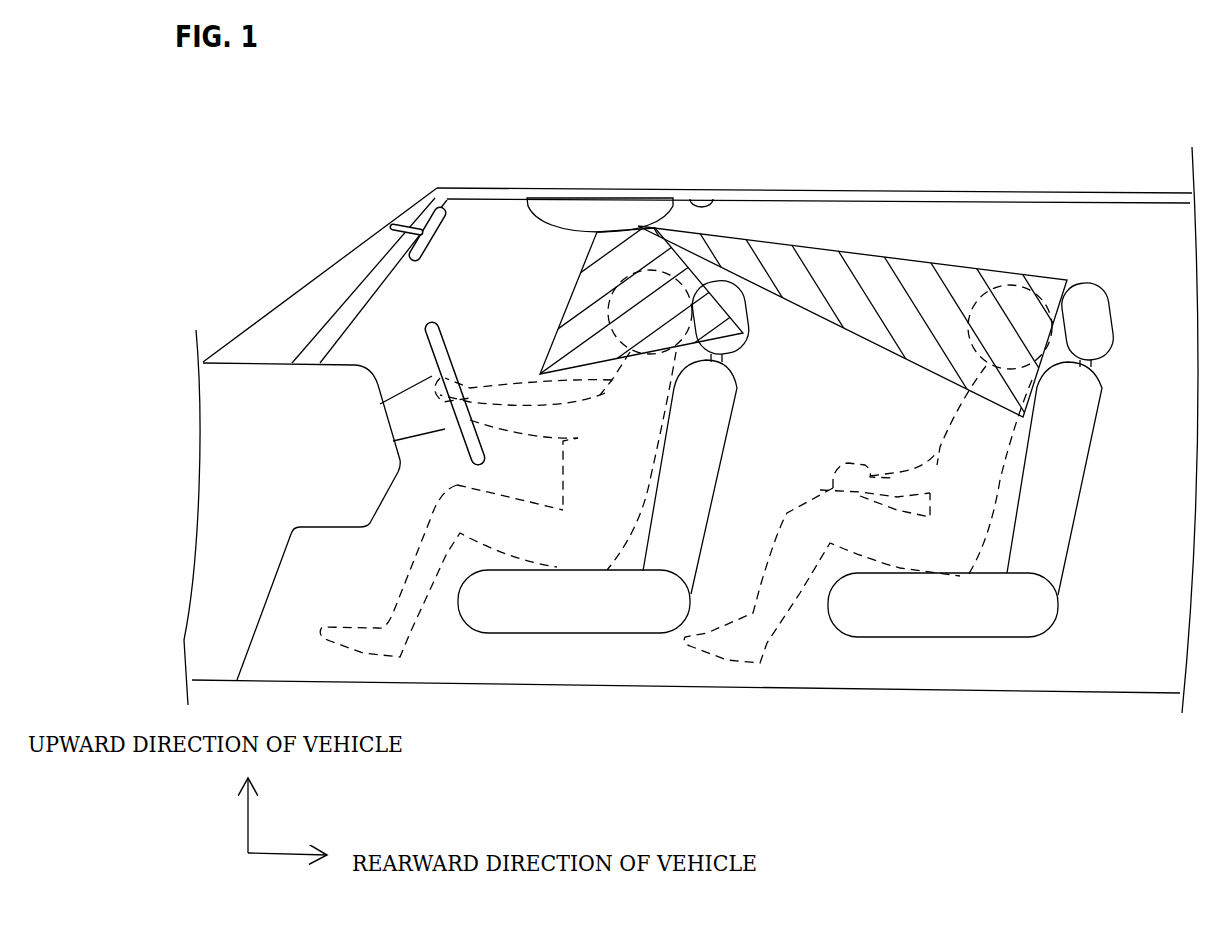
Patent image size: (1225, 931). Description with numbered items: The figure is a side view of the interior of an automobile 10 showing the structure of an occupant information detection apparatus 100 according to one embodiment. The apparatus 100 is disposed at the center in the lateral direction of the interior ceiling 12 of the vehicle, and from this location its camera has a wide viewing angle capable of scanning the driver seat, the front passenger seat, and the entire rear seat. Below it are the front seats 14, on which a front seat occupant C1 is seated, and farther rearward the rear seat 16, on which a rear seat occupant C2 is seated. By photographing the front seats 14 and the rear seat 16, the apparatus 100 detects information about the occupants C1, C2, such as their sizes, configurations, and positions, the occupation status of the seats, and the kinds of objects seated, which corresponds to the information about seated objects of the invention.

The occupant information detection apparatus 100 is at (620, 190).
The automobile 10 is at (848, 190).
The interior ceiling 12 is at (712, 200).
The front seats 14 is at (740, 389).
The rear seat 16 is at (1103, 383).
The front seat occupant C1 is at (507, 360).
The rear seat occupant C2 is at (933, 430).